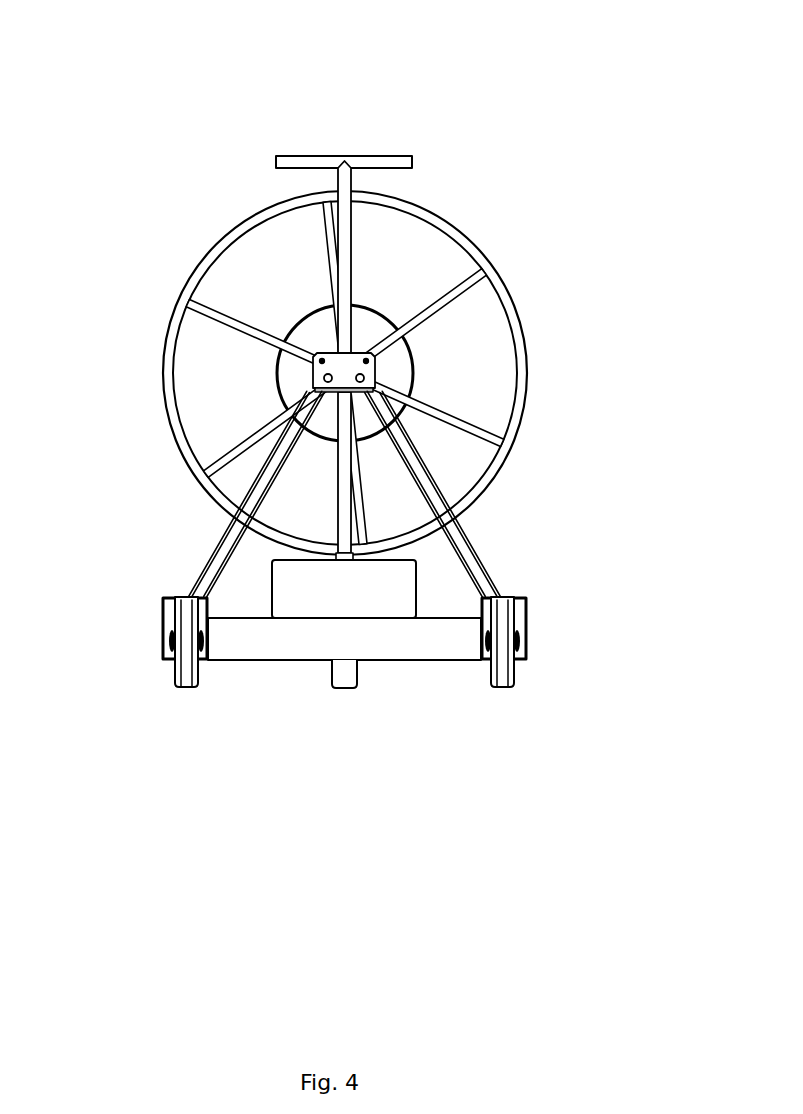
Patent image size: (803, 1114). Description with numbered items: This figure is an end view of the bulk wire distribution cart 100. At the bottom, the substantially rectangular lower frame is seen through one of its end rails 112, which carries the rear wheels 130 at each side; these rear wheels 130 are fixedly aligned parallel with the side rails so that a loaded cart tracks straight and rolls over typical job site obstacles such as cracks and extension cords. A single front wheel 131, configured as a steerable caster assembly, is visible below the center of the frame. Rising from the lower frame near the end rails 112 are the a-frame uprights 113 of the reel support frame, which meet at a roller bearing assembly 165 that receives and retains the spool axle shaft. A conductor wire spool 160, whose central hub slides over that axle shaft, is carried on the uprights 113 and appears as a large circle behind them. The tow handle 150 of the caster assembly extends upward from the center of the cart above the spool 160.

The bulk wire distribution cart 100 is at (466, 212).
The end rail 112 is at (260, 612).
The a-frame upright 113 is at (482, 538).
The rear wheel 130 is at (182, 691).
The front wheel 131 is at (335, 688).
The tow handle 150 is at (377, 149).
The conductor wire spool 160 is at (512, 286).
The roller bearing assembly 165 is at (325, 353).